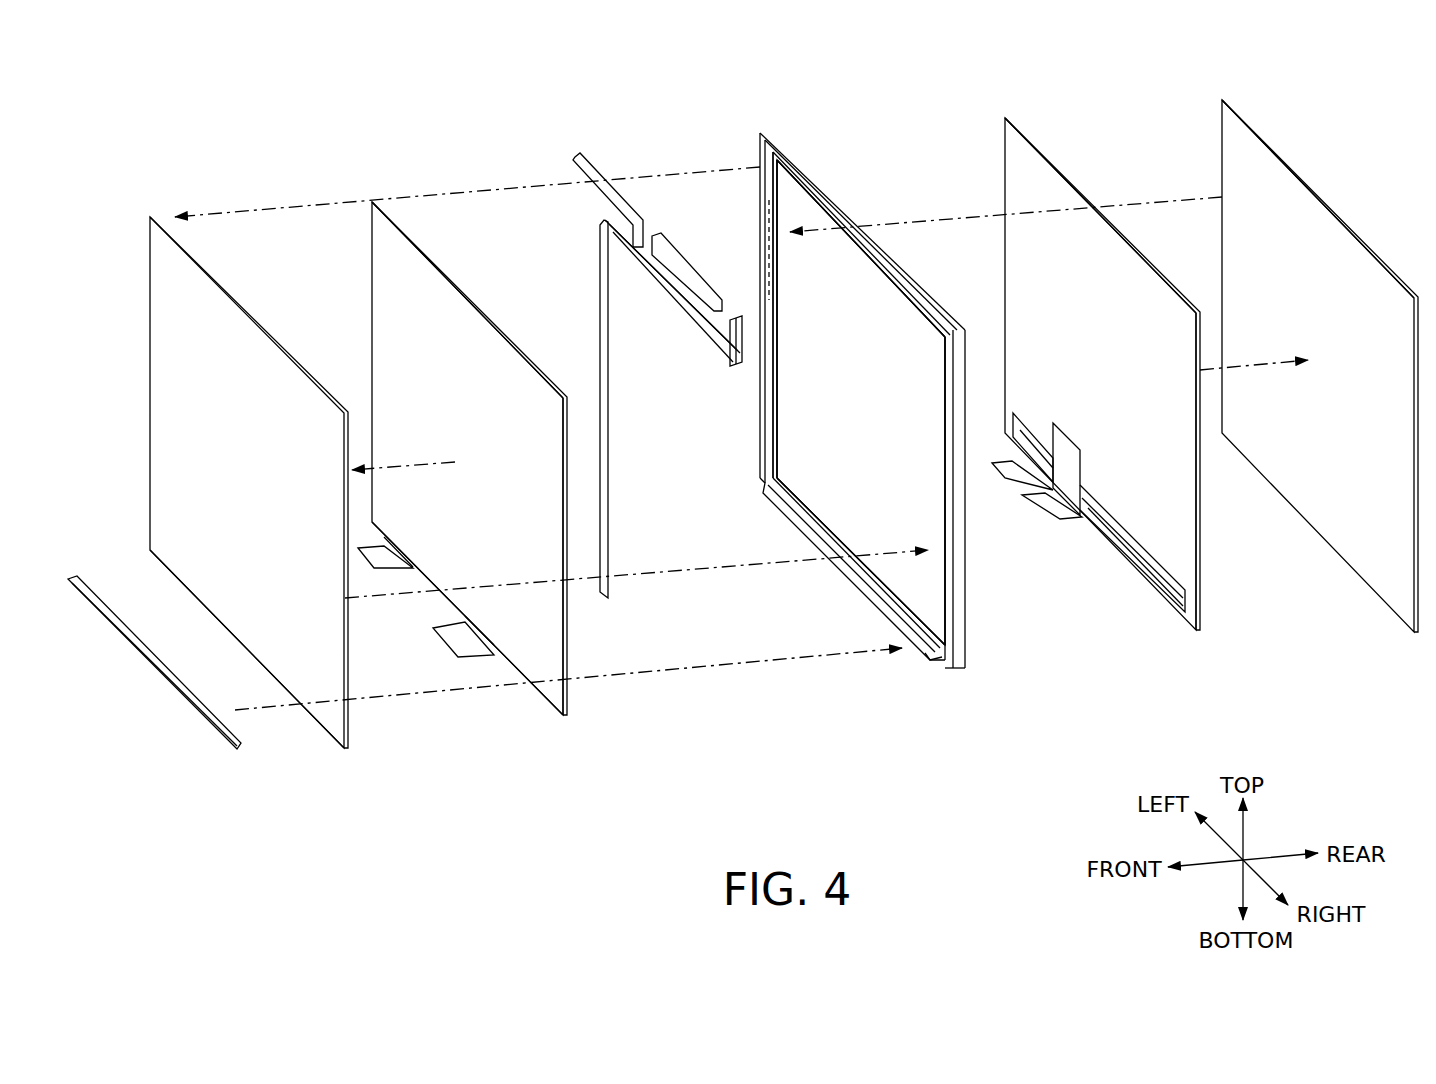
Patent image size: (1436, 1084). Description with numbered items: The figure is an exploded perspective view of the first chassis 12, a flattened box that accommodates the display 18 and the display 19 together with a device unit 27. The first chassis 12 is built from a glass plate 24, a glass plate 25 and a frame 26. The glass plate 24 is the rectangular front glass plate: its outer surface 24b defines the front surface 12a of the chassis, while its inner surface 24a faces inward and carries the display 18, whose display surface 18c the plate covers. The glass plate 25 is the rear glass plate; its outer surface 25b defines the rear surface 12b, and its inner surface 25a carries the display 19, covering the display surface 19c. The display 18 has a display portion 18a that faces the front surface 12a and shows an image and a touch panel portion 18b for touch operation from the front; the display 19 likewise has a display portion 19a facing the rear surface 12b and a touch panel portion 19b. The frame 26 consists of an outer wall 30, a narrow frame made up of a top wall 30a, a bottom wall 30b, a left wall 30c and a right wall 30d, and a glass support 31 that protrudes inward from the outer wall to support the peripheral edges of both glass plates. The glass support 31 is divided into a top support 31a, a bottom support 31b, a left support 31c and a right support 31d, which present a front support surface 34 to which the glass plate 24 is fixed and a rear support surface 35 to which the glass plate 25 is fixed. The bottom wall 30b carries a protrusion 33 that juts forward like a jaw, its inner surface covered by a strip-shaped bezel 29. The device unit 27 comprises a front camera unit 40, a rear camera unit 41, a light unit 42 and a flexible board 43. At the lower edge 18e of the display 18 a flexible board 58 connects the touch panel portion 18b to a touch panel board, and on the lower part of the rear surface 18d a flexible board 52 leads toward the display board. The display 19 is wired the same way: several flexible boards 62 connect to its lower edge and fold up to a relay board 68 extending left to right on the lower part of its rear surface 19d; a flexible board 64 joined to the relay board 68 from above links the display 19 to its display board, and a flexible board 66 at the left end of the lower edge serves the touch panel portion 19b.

The first chassis 12 is at (145, 80).
The front surface 12a is at (240, 492).
The rear surface 12b is at (1326, 411).
The display 18 is at (507, 469).
The display portion 18a is at (507, 469).
The touch panel portion 18b is at (507, 469).
The display surface 18c is at (400, 243).
The rear surface 18d is at (568, 658).
The lower edge 18e is at (512, 668).
The display 19 is at (1125, 396).
The display portion 19a is at (1125, 396).
The touch panel portion 19b is at (1125, 396).
The display surface 19c is at (1200, 553).
The rear surface 19d is at (1040, 173).
The glass plate 24 is at (240, 492).
The inner surface 24a is at (348, 717).
The outer surface 24b is at (240, 492).
The glass plate 25 is at (1326, 411).
The inner surface 25a is at (1342, 242).
The outer surface 25b is at (1326, 411).
The frame 26 is at (925, 675).
The device unit 27 is at (636, 340).
The bezel 29 is at (160, 675).
The outer wall 30 is at (855, 426).
The top wall 30a is at (852, 213).
The bottom wall 30b is at (864, 607).
The left wall 30c is at (760, 442).
The right wall 30d is at (958, 636).
The glass support 31 is at (857, 398).
The top support 31a is at (890, 282).
The bottom support 31b is at (818, 512).
The left support 31c is at (772, 325).
The right support 31d is at (943, 447).
The protrusion 33 is at (850, 572).
The front support surface 34 is at (773, 422).
The rear support surface 35 is at (783, 262).
The front camera unit 40 is at (690, 268).
The rear camera unit 41 is at (617, 197).
The light unit 42 is at (733, 328).
The flexible board 43 is at (600, 277).
The flexible board 52 is at (462, 643).
The flexible board 58 is at (385, 557).
The flexible boards 62 is at (1034, 455).
The flexible board 64 is at (1050, 522).
The flexible board 66 is at (1012, 472).
The relay board 68 is at (1132, 543).